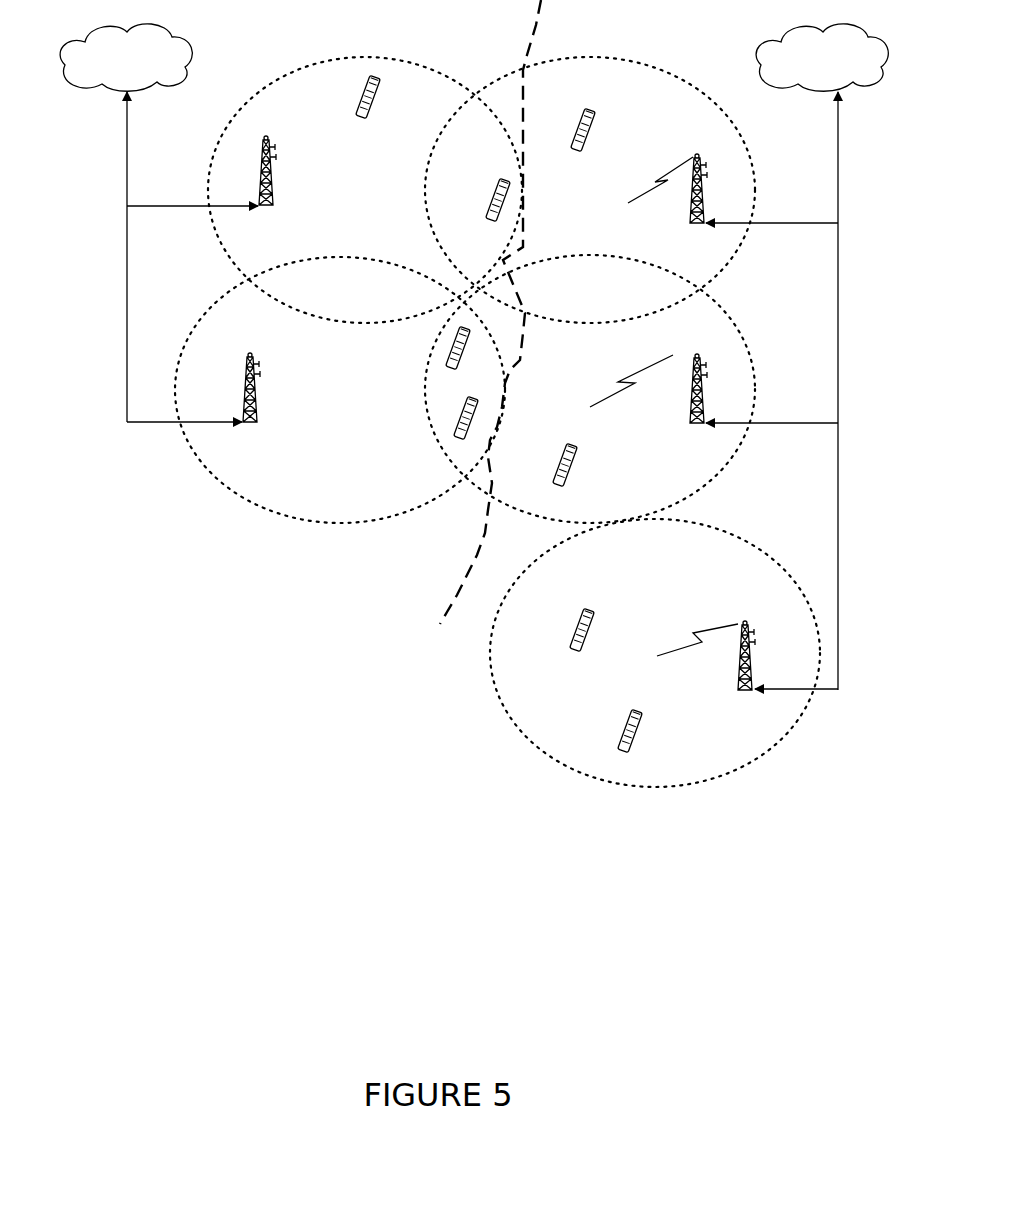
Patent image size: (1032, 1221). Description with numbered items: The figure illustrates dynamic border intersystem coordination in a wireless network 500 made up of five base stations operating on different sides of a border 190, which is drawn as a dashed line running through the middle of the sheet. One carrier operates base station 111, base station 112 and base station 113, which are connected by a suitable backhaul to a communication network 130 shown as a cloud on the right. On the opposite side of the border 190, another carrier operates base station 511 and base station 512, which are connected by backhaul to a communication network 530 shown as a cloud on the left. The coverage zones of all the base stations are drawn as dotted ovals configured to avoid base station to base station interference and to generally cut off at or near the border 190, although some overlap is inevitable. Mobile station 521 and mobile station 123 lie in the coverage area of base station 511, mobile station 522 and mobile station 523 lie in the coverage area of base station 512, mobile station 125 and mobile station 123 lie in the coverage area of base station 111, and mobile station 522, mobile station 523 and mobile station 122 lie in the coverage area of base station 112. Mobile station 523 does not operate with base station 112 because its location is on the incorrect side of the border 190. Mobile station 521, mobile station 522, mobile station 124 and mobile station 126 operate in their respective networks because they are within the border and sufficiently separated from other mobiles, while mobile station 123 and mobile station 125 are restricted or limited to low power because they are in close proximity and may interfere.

The wireless network 500 is at (317, 763).
The border 190 is at (467, 565).
The communication network 530 is at (155, 88).
The communication network 130 is at (758, 57).
The base station 511 is at (271, 200).
The base station 512 is at (255, 418).
The base station 111 is at (689, 222).
The base station 112 is at (689, 422).
The base station 113 is at (738, 688).
The mobile station 521 is at (360, 117).
The mobile station 522 is at (450, 366).
The mobile station 523 is at (458, 437).
The mobile station 122 is at (573, 460).
The mobile station 123 is at (490, 202).
The mobile station 124 is at (622, 745).
The mobile station 125 is at (575, 148).
The mobile station 126 is at (573, 648).